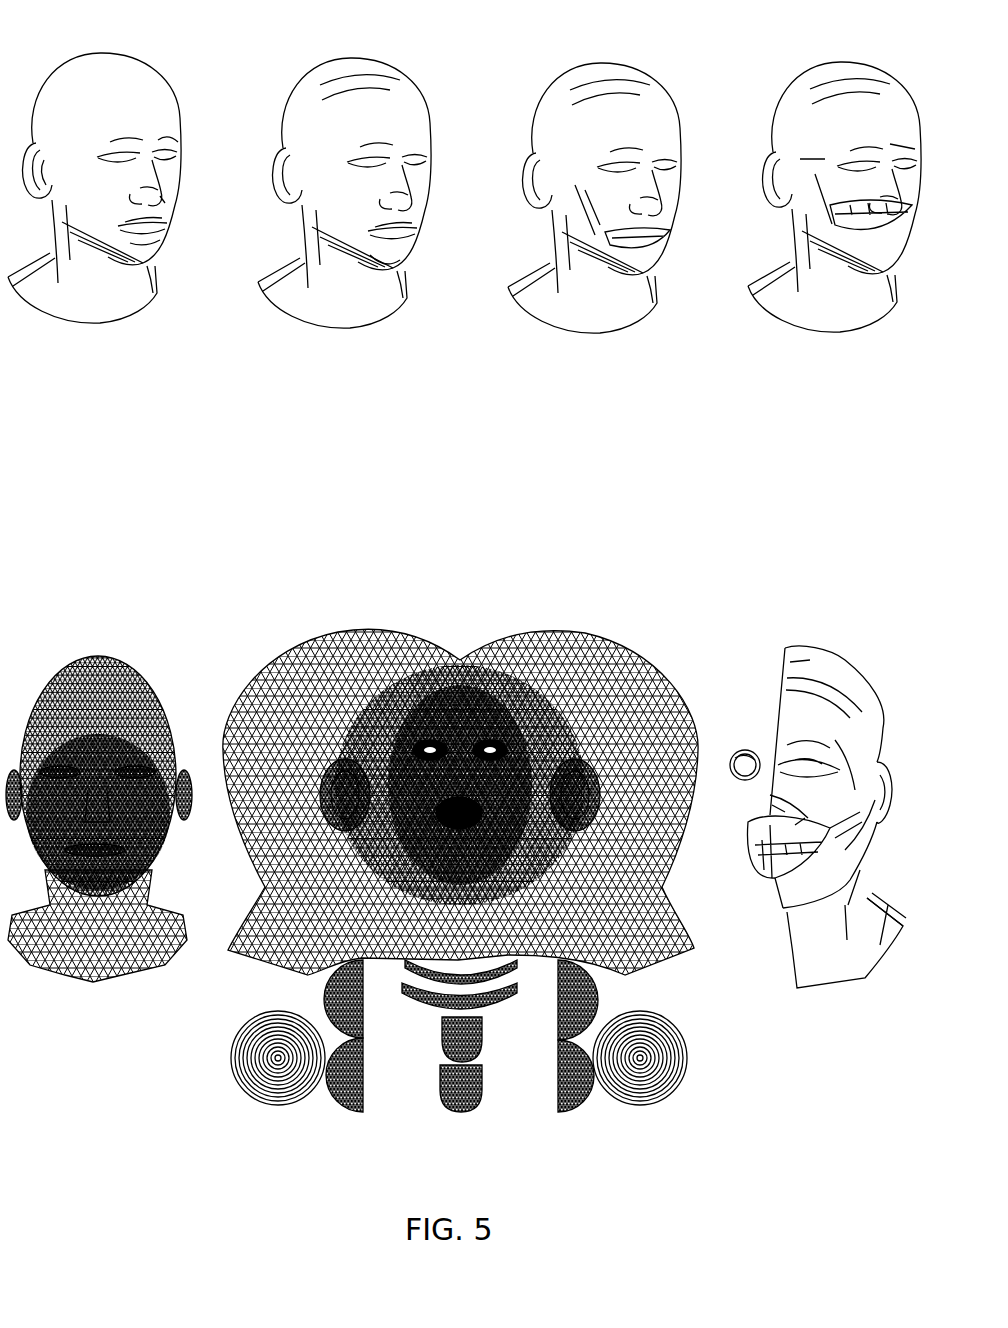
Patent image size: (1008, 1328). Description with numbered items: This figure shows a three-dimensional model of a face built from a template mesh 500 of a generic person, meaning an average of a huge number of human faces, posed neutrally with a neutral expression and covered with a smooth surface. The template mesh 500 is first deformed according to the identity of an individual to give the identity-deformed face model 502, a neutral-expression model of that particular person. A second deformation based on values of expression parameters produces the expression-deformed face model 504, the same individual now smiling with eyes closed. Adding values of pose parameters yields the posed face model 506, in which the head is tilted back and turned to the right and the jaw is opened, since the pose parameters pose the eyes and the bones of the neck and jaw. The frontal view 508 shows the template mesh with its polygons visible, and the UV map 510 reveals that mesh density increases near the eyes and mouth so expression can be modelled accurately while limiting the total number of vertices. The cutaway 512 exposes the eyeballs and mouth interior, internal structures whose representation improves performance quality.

The template mesh 500 is at (85, 35).
The identity-deformed face model 502 is at (321, 35).
The expression-deformed face model 504 is at (568, 35).
The posed face model 506 is at (811, 35).
The frontal view of template mesh with polygons visible 508 is at (80, 560).
The UV map 510 is at (446, 560).
The cutaway of template mesh 512 is at (795, 560).